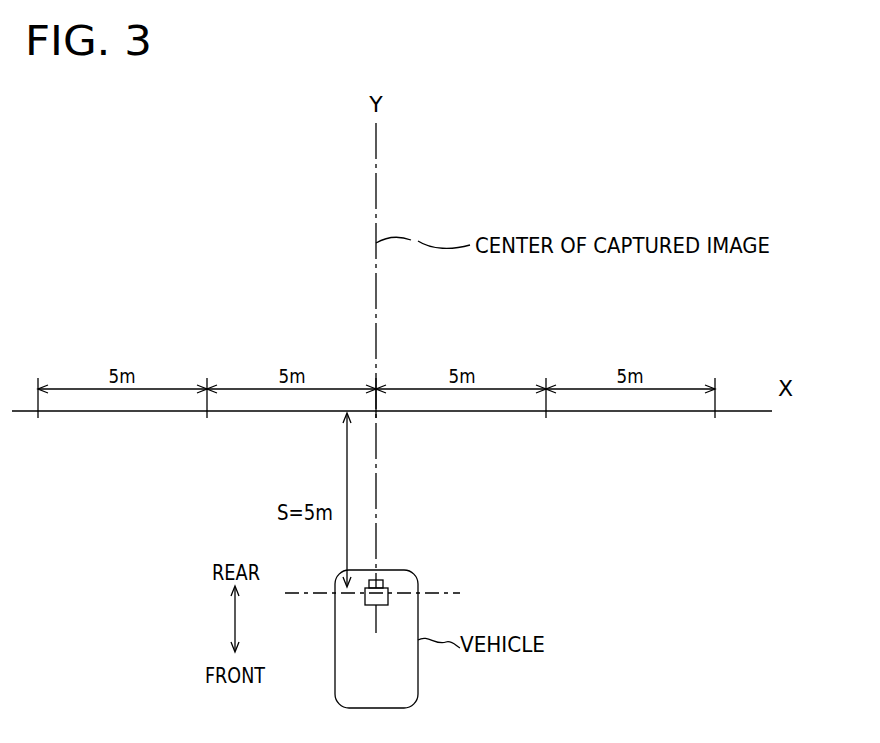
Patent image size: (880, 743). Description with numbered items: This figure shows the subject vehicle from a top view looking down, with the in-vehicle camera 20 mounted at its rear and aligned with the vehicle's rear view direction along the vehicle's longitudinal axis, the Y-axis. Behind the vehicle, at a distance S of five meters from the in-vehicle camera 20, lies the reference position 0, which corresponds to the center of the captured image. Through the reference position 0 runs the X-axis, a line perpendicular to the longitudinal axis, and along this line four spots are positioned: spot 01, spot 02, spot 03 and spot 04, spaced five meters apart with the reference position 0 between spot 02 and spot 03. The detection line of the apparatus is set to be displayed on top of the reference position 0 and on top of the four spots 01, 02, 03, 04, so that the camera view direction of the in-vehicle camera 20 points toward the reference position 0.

The in-vehicle camera 20 is at (388, 588).
The spot O1 01 is at (38, 418).
The spot O2 02 is at (207, 418).
The reference position O 0 is at (376, 418).
The spot O3 03 is at (546, 418).
The spot O4 04 is at (715, 418).